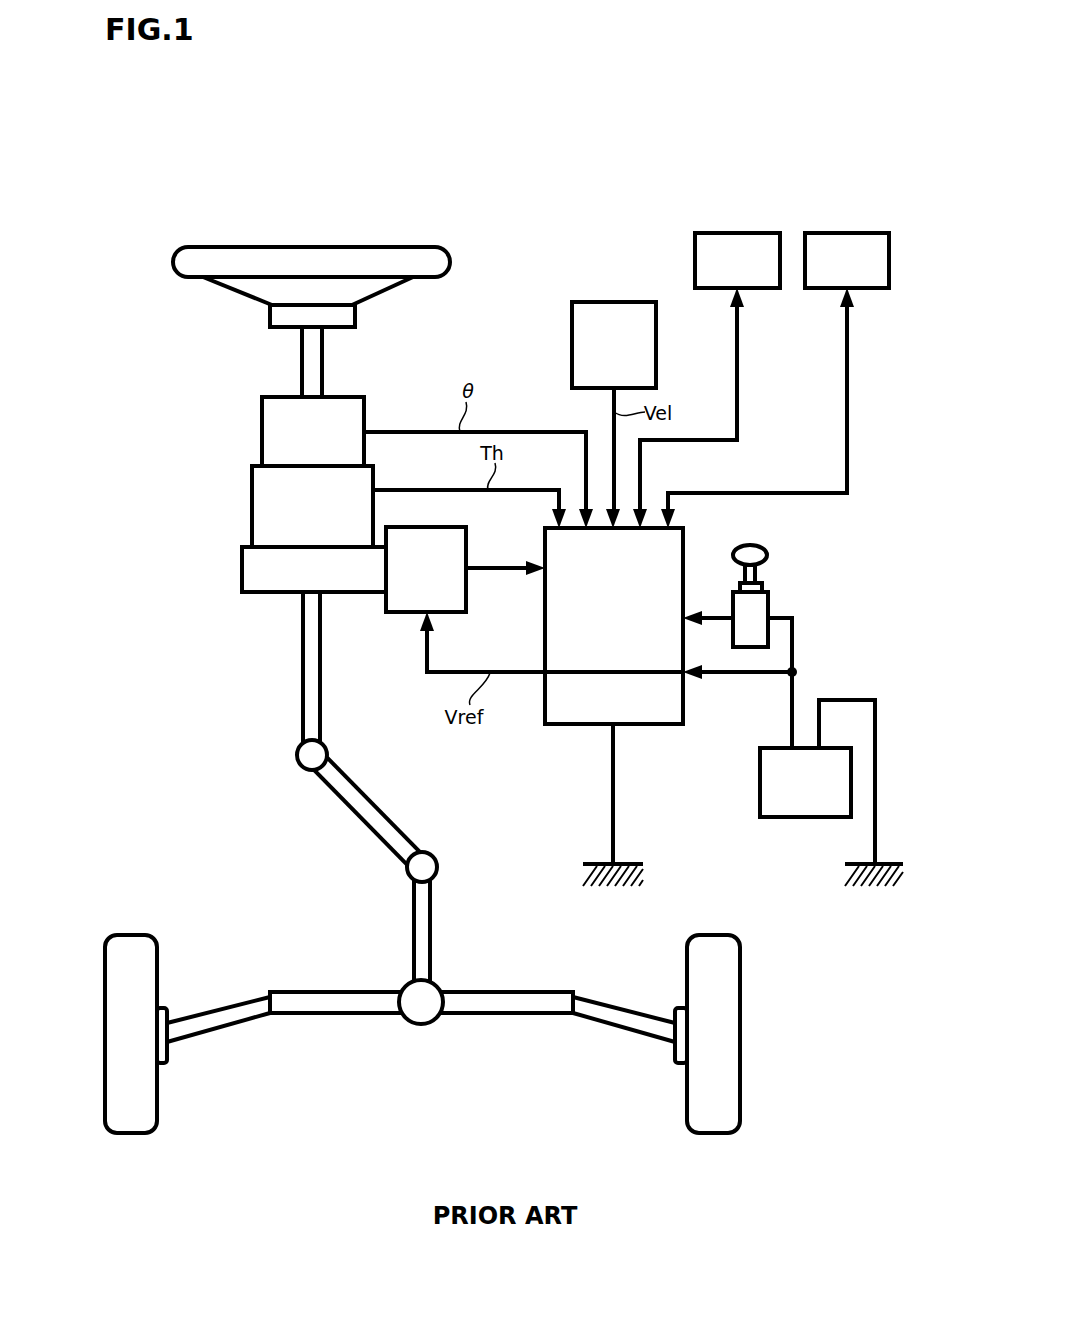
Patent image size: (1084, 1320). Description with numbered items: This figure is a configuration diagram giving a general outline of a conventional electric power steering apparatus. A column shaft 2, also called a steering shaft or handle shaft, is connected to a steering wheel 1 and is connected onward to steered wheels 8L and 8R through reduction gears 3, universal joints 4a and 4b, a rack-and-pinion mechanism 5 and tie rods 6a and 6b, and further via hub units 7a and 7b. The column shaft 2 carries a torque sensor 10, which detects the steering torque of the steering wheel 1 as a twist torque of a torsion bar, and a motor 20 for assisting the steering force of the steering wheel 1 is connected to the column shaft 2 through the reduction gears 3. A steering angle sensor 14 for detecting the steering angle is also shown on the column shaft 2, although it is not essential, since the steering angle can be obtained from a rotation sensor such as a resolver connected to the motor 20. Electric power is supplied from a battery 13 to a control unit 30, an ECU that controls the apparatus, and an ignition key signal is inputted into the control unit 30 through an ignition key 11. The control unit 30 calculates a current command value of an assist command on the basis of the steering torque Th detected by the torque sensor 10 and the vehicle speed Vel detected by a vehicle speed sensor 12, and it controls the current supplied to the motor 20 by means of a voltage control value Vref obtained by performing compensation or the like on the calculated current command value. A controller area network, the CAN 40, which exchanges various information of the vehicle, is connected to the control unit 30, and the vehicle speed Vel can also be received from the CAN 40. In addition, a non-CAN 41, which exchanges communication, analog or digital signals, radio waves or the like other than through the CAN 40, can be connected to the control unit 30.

The steering wheel 1 is at (452, 258).
The column shaft 2 is at (302, 375).
The reduction gears 3 is at (242, 577).
The universal joint 4a is at (297, 765).
The universal joint 4b is at (408, 876).
The rack-and-pinion mechanism 5 is at (438, 984).
The tie rod 6a is at (200, 1012).
The tie rod 6b is at (605, 1000).
The hub unit 7a is at (167, 1058).
The hub unit 7b is at (675, 1058).
The steered wheel 8L is at (157, 1120).
The steered wheel 8R is at (687, 1120).
The torque sensor 10 is at (252, 497).
The ignition key 11 is at (768, 555).
The vehicle speed sensor 12 is at (656, 322).
The battery 13 is at (760, 780).
The steering angle sensor 14 is at (262, 432).
The motor 20 is at (466, 542).
The control unit 30 is at (683, 542).
The CAN 40 is at (866, 233).
The non-CAN 41 is at (757, 233).